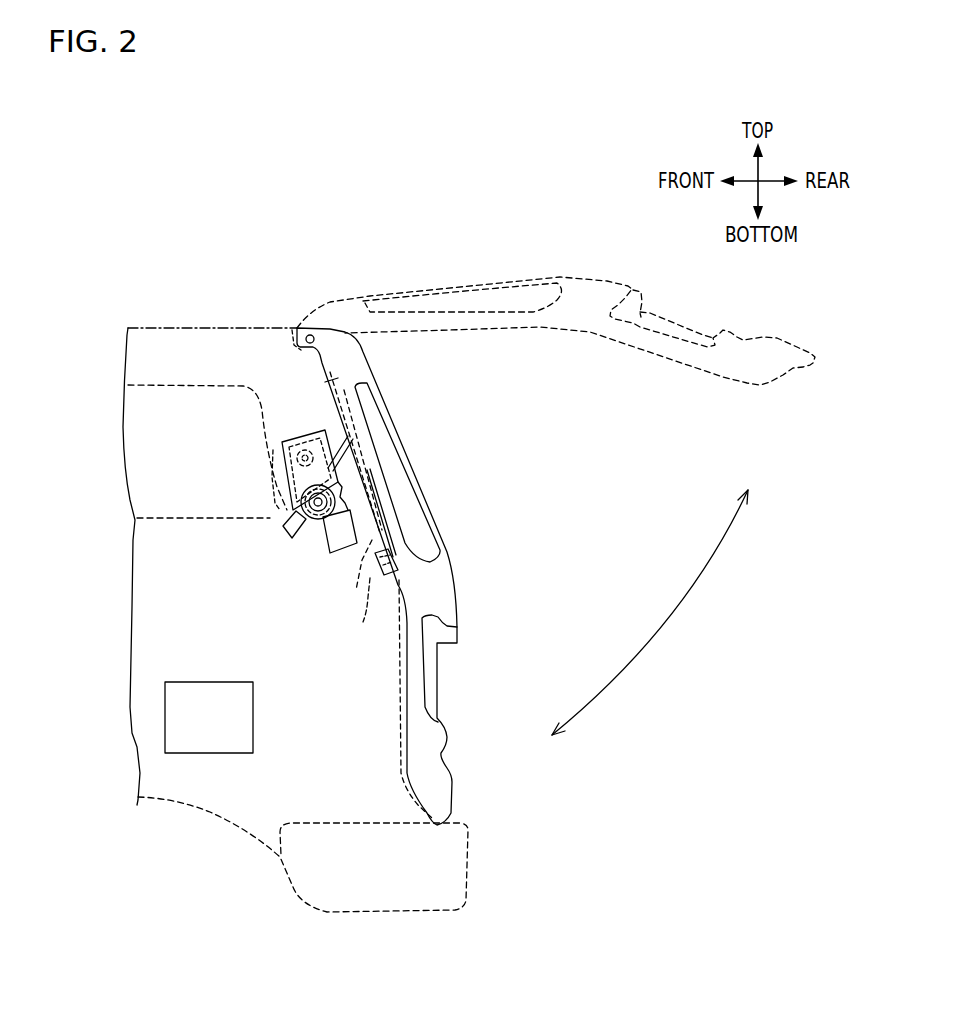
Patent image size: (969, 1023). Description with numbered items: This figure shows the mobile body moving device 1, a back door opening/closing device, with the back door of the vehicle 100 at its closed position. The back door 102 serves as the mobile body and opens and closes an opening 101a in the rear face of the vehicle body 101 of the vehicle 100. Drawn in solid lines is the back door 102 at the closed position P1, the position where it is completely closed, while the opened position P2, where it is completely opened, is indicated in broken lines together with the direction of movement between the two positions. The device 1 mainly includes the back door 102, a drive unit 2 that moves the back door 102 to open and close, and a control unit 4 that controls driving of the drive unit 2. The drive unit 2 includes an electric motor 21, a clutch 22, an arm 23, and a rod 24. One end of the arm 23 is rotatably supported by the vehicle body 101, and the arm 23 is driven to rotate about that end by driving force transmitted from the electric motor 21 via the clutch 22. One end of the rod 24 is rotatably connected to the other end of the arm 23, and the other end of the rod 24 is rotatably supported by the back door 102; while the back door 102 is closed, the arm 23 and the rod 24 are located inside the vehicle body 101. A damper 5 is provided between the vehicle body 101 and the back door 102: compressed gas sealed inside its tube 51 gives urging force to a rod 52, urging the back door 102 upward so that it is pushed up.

The mobile body moving device 1 is at (491, 510).
The drive unit 2 is at (262, 480).
The control unit 4 is at (217, 729).
The damper 5 is at (332, 597).
The electric motor 21 is at (328, 543).
The clutch 22 is at (285, 508).
The arm 23 is at (292, 513).
The rod 24 is at (313, 445).
The tube 51 is at (370, 557).
The rod 52 is at (363, 622).
The vehicle 100 is at (162, 313).
The vehicle body 101 is at (226, 327).
The opening 101a is at (338, 378).
The back door 102 is at (389, 418).
The closed position P1 is at (473, 720).
The opened position P2 is at (763, 405).